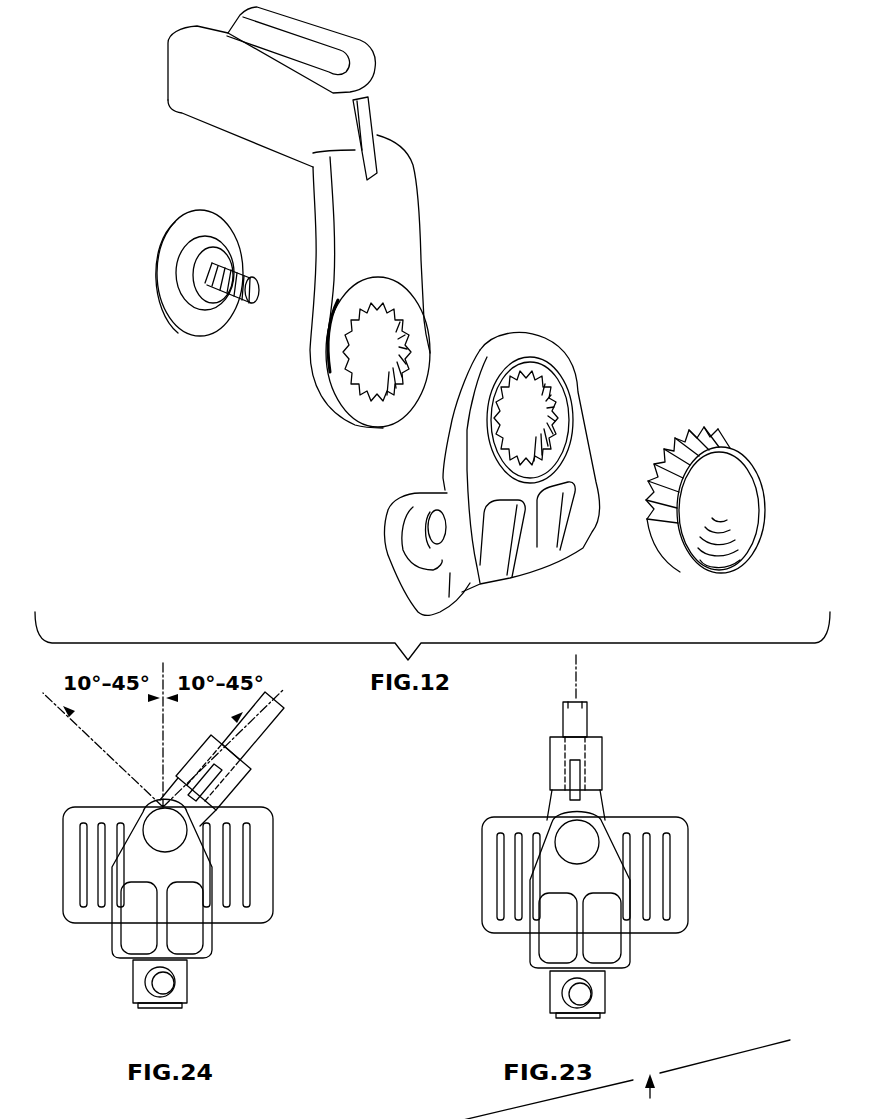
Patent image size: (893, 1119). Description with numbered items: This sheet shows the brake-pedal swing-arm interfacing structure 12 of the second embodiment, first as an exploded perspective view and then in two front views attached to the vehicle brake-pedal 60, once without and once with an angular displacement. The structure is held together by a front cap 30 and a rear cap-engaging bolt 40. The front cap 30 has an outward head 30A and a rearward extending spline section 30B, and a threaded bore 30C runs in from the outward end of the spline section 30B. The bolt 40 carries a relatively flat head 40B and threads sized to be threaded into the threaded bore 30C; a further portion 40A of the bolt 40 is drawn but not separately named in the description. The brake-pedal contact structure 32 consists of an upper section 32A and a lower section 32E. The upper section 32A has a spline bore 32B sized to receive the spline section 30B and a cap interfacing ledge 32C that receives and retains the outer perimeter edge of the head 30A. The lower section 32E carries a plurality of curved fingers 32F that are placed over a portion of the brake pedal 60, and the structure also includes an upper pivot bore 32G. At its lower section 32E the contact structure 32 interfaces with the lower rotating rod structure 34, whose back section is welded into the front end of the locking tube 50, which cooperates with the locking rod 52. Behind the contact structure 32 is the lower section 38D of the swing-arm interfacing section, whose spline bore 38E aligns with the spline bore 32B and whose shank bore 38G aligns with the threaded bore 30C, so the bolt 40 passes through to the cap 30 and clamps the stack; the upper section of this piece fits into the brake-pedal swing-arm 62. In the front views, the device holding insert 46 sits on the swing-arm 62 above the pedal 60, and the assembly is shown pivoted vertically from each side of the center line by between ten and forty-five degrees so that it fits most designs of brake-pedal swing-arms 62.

In FIG. 12, the brake-pedal swing-arm interfacing structure 12 is at (570, 97).
In FIG. 12, the front cap 30 is at (719, 504).
In FIG. 12, the outward head 30A is at (750, 527).
In FIG. 12, the rearward extending spline section 30B is at (693, 453).
In FIG. 12, the threaded bore 30C is at (647, 470).
In FIG. 12, the brake-pedal contact structure 32 is at (464, 471).
In FIG. 24, the brake-pedal contact structure 32 is at (210, 948).
In FIG. 23, the brake-pedal contact structure 32 is at (623, 948).
In FIG. 12, the upper section 32A is at (452, 470).
In FIG. 12, the spline bore 32B is at (562, 410).
In FIG. 12, the cap interfacing ledge 32C is at (537, 372).
In FIG. 12, the lower section 32E is at (433, 603).
In FIG. 12, the curved fingers 32F is at (417, 573).
In FIG. 12, the upper pivot bore 32G is at (447, 510).
In FIG. 24, the lower rotating rod structure 34 is at (137, 977).
In FIG. 23, the lower rotating rod structure 34 is at (550, 995).
In FIG. 12, the lower section 38D is at (363, 410).
In FIG. 12, the spline bore 38E is at (482, 337).
In FIG. 12, the shank bore 38G is at (377, 330).
In FIG. 12, the rear cap-engaging bolt 40 is at (198, 274).
In FIG. 12, the inner washer 40A is at (227, 307).
In FIG. 12, the flat head 40B is at (170, 238).
In FIG. 24, the device holding insert 46 is at (232, 783).
In FIG. 23, the device holding insert 46 is at (592, 765).
In FIG. 24, the locking tube 50 is at (173, 987).
In FIG. 23, the locking rod 52 is at (600, 993).
In FIG. 24, the vehicle brake-pedal 60 is at (262, 865).
In FIG. 23, the vehicle brake-pedal 60 is at (677, 853).
In FIG. 24, the brake-pedal swing-arm 62 is at (257, 728).
In FIG. 23, the brake-pedal swing-arm 62 is at (588, 722).